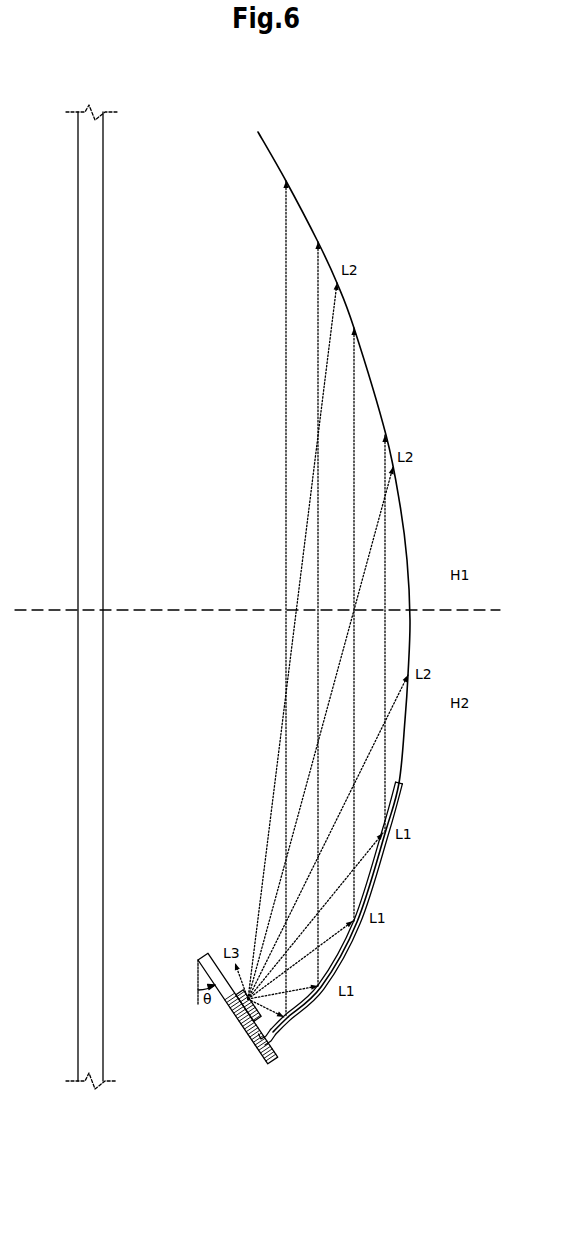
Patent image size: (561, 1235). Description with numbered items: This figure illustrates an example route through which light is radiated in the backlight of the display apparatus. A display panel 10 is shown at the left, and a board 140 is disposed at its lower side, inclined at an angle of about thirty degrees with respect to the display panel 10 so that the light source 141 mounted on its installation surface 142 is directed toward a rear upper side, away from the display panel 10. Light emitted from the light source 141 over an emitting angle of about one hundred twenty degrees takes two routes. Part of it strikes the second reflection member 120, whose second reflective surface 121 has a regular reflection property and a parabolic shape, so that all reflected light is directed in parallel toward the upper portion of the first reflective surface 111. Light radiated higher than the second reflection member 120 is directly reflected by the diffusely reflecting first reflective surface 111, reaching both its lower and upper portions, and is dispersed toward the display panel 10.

The display panel 10 is at (78, 366).
The first reflective surface 111 is at (365, 343).
The second reflection member 120 is at (352, 943).
The second reflective surface 121 is at (340, 960).
The board 140 is at (252, 1000).
The light source 141 is at (271, 1036).
The installation surface 142 is at (212, 957).